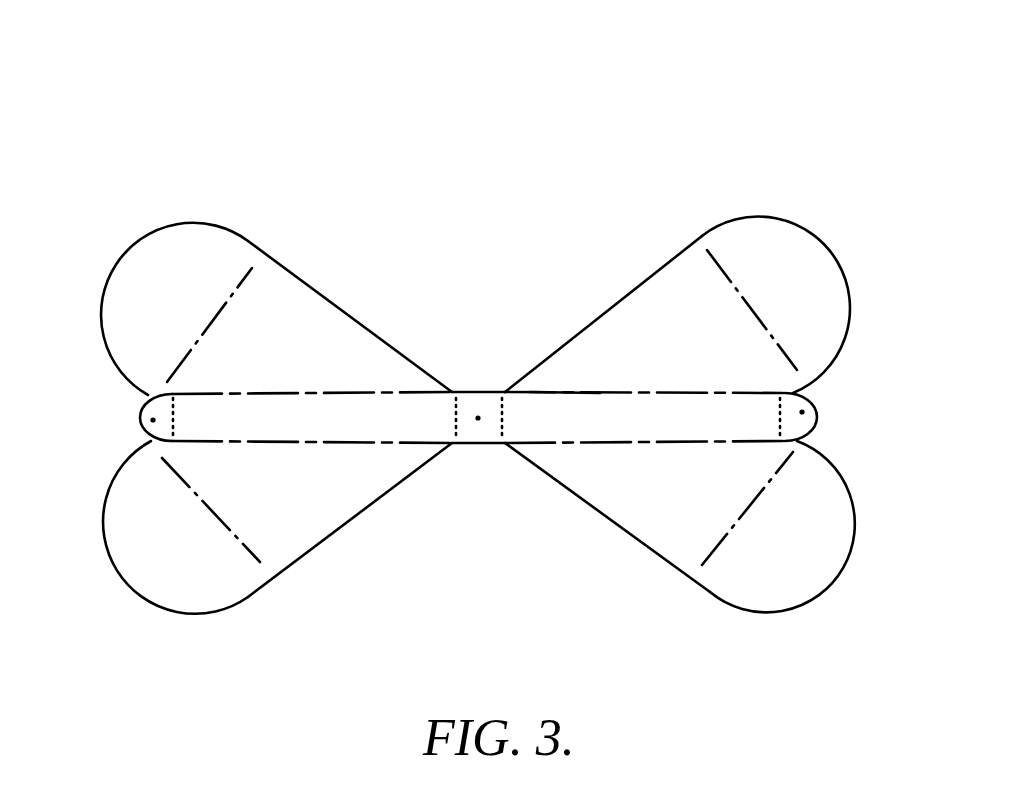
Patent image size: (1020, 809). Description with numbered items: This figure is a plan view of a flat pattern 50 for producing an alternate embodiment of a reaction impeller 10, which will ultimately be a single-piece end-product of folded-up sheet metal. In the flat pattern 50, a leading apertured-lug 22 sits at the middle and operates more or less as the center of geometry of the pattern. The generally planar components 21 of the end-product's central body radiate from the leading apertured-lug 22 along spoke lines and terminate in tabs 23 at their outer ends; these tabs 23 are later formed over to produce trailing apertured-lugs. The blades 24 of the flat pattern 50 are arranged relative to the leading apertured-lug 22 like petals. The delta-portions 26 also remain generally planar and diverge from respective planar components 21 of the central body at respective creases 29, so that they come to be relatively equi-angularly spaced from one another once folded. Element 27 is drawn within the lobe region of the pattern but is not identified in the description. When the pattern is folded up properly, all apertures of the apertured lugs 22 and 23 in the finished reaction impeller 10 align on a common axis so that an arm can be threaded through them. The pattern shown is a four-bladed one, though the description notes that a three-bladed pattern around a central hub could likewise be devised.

The flat pattern 50 is at (468, 328).
The reaction impeller 10 is at (468, 328).
The planar components of the central body 21 is at (320, 435).
The leading apertured-lug 22 is at (466, 437).
The tabs 23 is at (135, 422).
The blades 24 is at (287, 282).
The delta-portions 26 is at (698, 498).
The fold line of lobe 27 is at (798, 581).
The creases 29 is at (568, 392).